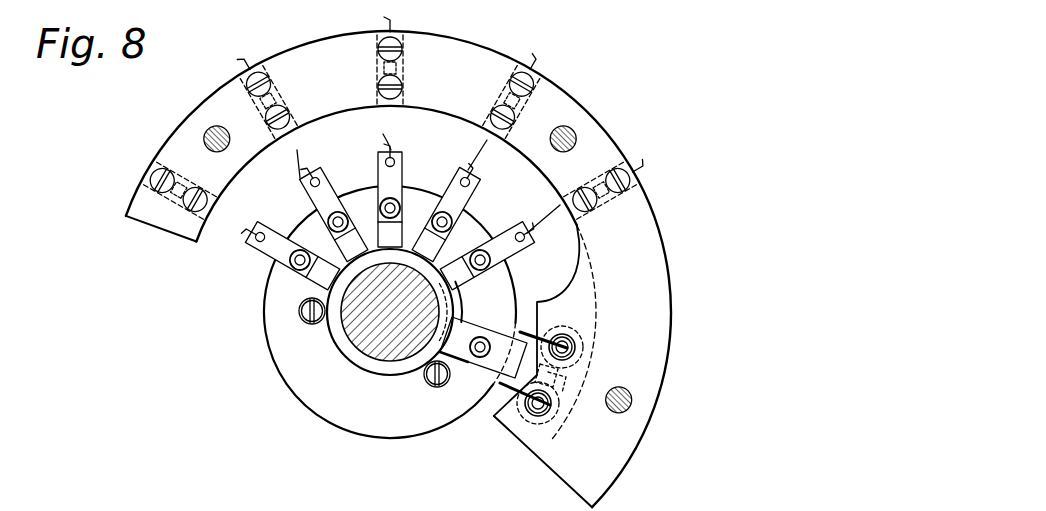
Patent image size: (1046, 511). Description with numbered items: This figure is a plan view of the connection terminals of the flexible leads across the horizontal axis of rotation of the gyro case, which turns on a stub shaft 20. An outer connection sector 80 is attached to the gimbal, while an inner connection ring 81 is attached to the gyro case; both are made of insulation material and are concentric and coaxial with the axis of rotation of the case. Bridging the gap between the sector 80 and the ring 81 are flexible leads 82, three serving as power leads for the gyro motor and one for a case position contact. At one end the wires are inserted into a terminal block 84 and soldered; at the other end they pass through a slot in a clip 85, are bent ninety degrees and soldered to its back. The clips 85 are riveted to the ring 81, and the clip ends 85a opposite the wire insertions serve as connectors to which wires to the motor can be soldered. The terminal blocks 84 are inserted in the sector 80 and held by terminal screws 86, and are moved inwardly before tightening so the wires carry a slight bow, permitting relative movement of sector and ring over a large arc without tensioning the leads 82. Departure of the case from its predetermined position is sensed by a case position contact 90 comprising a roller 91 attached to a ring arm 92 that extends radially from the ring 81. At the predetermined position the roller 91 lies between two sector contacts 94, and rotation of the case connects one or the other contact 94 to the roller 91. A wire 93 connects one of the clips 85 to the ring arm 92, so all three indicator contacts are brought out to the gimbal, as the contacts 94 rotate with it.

The stub shaft 20 is at (401, 336).
The outer connection sector 80 is at (640, 300).
The inner connection ring 81 is at (412, 424).
The flexible leads 82 is at (383, 134).
The terminal block 84 is at (540, 66).
The clip 85 is at (400, 219).
The clip end 85a is at (521, 252).
The terminal screws 86 is at (405, 62).
The case position contact 90 is at (512, 333).
The roller 91 is at (566, 384).
The ring arm 92 is at (490, 368).
The wire 93 is at (458, 309).
The sector contacts 94 is at (575, 345).